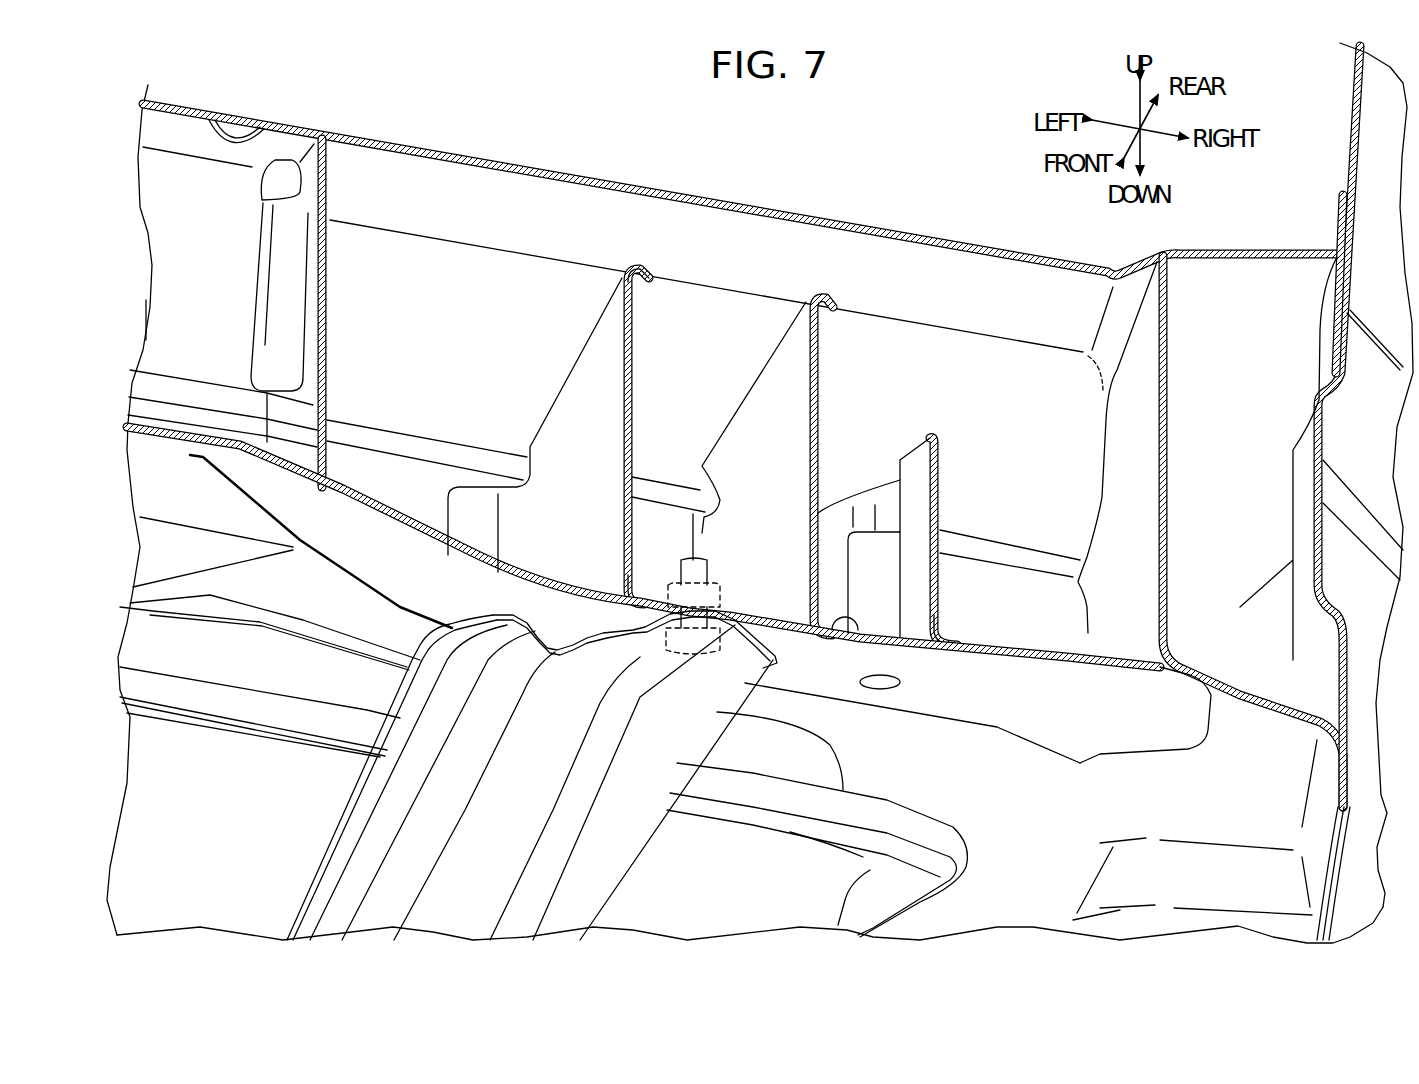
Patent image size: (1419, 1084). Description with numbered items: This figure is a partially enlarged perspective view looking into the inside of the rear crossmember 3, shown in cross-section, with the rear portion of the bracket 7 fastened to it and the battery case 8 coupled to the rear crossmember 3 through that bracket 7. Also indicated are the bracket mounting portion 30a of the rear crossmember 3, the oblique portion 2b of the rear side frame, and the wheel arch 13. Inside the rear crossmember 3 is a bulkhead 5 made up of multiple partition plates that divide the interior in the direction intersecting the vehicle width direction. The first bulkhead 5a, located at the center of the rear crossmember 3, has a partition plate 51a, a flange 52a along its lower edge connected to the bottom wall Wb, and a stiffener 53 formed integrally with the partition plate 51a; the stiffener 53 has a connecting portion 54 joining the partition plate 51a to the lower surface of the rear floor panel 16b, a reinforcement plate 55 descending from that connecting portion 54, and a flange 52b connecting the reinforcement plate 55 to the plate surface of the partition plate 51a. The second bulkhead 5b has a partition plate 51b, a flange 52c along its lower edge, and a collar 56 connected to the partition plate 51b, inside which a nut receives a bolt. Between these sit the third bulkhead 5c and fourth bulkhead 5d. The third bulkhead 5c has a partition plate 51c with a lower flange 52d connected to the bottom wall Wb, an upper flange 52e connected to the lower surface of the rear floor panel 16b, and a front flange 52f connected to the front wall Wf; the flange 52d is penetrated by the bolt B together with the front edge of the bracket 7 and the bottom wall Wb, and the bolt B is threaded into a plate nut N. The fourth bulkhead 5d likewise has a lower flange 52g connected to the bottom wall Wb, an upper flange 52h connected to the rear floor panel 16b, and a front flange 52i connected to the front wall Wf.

The oblique portion 2b is at (1240, 252).
The rear crossmember 3 is at (1036, 702).
The bulkhead 5 is at (615, 297).
The first bulkhead 5a is at (333, 175).
The second bulkhead 5b is at (956, 419).
The third bulkhead 5c is at (652, 330).
The fourth bulkhead 5d is at (836, 357).
The bracket 7 is at (380, 818).
The battery case 8 is at (780, 893).
The wheel arch 13 is at (1352, 127).
The rear floor panel 16b is at (498, 170).
The bracket mounting portion 30a is at (727, 601).
The partition plate 51a is at (308, 397).
The partition plate 51b is at (917, 523).
The partition plate 51c is at (740, 418).
The flange 52a is at (333, 487).
The flange 52b is at (282, 297).
The flange 52c is at (942, 637).
The flange 52d is at (667, 600).
The flange 52e is at (640, 268).
The flange 52f is at (471, 507).
The flange 52g is at (848, 640).
The flange 52h is at (778, 328).
The flange 52i is at (697, 510).
The stiffener 53 is at (221, 182).
The connecting portion 54 is at (167, 127).
The reinforcement plate 55 is at (177, 277).
The collar 56 is at (873, 557).
The bolt B is at (665, 640).
The plate nut N is at (722, 590).
The bottom wall Wb is at (377, 556).
The front wall Wf is at (1070, 627).